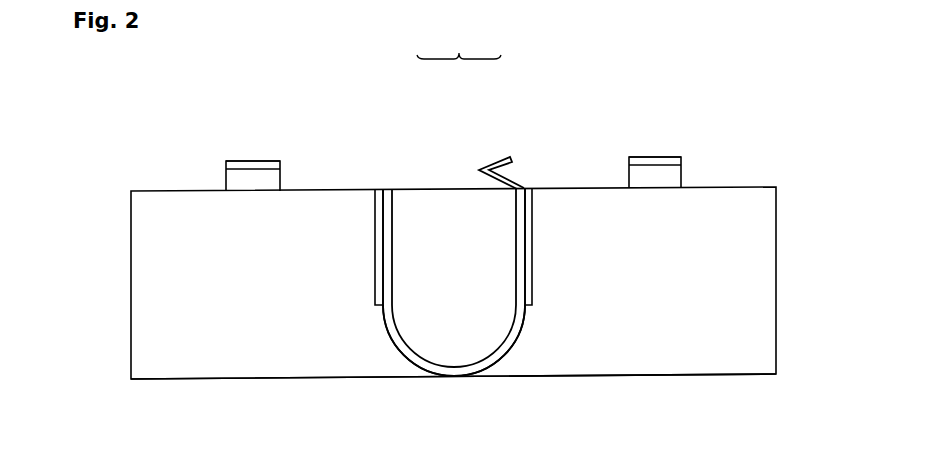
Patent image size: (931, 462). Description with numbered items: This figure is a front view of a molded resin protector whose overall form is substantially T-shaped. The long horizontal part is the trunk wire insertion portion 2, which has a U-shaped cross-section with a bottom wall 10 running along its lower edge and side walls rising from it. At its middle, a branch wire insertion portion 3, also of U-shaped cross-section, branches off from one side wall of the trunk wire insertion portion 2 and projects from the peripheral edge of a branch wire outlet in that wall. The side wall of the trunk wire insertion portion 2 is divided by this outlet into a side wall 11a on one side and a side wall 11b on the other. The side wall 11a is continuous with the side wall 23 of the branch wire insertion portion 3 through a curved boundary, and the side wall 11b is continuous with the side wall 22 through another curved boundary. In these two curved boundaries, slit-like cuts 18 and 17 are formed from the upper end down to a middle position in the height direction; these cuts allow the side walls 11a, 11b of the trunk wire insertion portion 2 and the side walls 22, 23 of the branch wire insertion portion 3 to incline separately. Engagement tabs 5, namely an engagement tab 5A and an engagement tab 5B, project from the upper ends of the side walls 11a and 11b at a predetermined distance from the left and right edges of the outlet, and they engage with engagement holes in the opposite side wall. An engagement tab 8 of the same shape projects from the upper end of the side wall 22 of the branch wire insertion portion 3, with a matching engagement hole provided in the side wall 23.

The trunk wire insertion portion 2 is at (127, 297).
The bottom wall 10 is at (711, 375).
The side wall 11a is at (195, 217).
The side wall 11b is at (706, 210).
The engagement tabs 5 is at (459, 44).
The engagement tab 5A is at (262, 161).
The engagement tab 5B is at (650, 157).
The slit-like cut 18 is at (379, 190).
The slit-like cut 17 is at (532, 190).
The engagement tab 8 is at (506, 158).
The branch wire insertion portion 3 is at (453, 350).
The side wall 23 is at (381, 323).
The side wall 22 is at (527, 323).